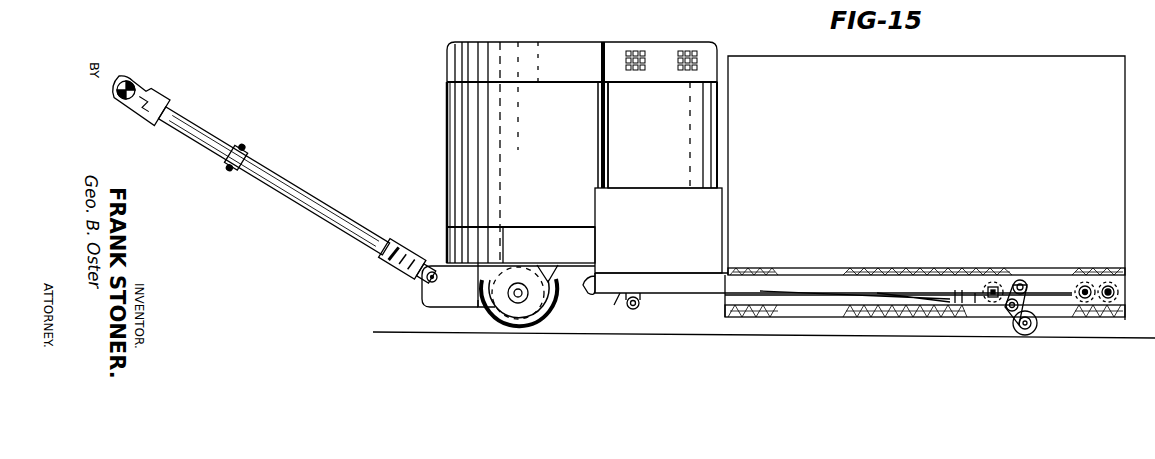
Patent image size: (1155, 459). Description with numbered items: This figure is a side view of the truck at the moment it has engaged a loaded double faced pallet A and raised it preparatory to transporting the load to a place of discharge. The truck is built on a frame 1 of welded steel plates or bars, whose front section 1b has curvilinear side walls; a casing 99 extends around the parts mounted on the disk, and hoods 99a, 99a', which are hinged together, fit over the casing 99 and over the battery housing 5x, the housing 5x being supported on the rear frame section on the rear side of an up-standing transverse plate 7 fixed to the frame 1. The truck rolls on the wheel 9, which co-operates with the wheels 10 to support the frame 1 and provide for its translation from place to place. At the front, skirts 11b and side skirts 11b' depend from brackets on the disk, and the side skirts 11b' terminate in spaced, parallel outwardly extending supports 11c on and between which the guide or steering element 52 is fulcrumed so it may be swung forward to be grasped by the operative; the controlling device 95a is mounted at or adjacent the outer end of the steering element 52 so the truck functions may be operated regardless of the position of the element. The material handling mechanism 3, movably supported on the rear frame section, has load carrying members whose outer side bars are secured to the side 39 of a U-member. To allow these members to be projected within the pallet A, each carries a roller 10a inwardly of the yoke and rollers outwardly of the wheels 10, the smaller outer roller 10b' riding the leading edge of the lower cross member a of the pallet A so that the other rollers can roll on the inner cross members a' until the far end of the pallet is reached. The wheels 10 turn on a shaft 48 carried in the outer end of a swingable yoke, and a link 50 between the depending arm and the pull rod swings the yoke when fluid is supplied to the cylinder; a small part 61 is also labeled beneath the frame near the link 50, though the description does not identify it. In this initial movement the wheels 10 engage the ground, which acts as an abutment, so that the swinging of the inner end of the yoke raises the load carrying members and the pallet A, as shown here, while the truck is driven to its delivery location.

The controlling device 95a is at (132, 87).
The guide or steering element 52 is at (311, 174).
The outwardly extending supports 11c is at (425, 290).
The side skirts 11b' is at (519, 295).
The integral skirts 11b is at (509, 310).
The wheel 9 is at (570, 327).
The front frame section 1b is at (535, 232).
The frame 1 is at (521, 245).
The hood 99a is at (525, 51).
The hood 99a' is at (660, 50).
The casing or housing 99 is at (585, 133).
The up-standing transverse plate 7 is at (602, 162).
The side of U-member 39 is at (657, 196).
The battery housing 5x is at (702, 146).
The material handling mechanism 3 is at (752, 259).
The double faced pallet A is at (903, 268).
The shaft 48 is at (580, 282).
The caster fork 61 is at (611, 305).
The link 50 is at (641, 301).
The lower cross member a is at (925, 314).
The inner cross members a' is at (983, 330).
The roller 10a is at (993, 302).
The wheels 10 is at (1016, 333).
The roller 10b' is at (1096, 319).